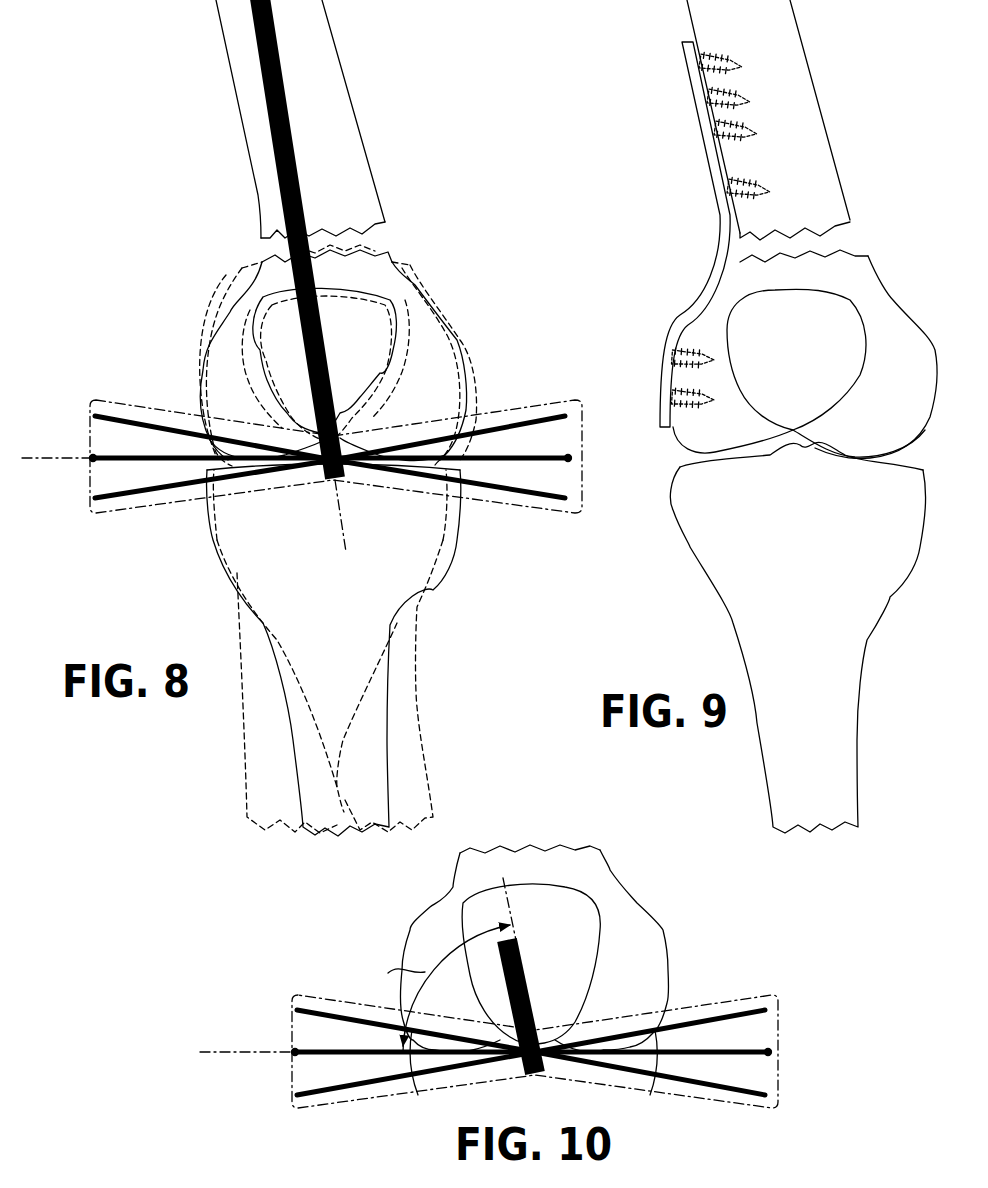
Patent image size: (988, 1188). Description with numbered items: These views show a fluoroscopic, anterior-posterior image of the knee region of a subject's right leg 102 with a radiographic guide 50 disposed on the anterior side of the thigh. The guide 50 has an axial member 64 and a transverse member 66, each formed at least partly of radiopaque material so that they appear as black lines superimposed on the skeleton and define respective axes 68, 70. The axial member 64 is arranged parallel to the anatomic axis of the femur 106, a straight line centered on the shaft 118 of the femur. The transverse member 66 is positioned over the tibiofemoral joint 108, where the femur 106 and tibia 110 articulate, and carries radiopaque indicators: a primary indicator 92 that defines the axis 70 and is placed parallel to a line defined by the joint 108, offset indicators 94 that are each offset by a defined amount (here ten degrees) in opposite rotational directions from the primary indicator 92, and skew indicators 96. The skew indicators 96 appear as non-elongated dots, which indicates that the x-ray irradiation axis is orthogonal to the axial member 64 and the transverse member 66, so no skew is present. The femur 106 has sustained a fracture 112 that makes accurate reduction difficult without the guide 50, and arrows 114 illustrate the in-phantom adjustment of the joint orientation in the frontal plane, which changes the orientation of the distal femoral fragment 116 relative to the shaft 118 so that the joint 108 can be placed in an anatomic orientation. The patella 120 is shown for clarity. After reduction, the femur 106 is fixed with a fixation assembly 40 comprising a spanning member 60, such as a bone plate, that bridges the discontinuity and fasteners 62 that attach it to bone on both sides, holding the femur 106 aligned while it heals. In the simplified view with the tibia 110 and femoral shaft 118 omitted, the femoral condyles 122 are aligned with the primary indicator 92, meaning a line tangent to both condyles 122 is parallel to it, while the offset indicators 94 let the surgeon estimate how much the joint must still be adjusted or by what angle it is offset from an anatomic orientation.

In FIG. 8, the right leg 102 is at (168, 134).
In FIG. 9, the right leg 102 is at (635, 133).
In FIG. 8, the guide 50 is at (252, 102).
In FIG. 10, the guide 50 is at (383, 944).
In FIG. 8, the axial member 64 is at (293, 145).
In FIG. 10, the axial member 64 is at (535, 990).
In FIG. 8, the shaft 118 is at (343, 70).
In FIG. 9, the shaft 118 is at (810, 70).
In FIG. 8, the right femur 106 is at (372, 161).
In FIG. 9, the right femur 106 is at (845, 162).
In FIG. 10, the right femur 106 is at (626, 892).
In FIG. 8, the fracture 112 is at (393, 233).
In FIG. 9, the fracture 112 is at (863, 233).
In FIG. 8, the patella 120 is at (258, 318).
In FIG. 9, the patella 120 is at (845, 400).
In FIG. 10, the patella 120 is at (578, 1000).
In FIG. 8, the distal femoral fragment 116 is at (420, 288).
In FIG. 9, the distal femoral fragment 116 is at (893, 312).
In FIG. 10, the distal femoral fragment 116 is at (642, 908).
In FIG. 8, the transverse member 66 is at (131, 404).
In FIG. 10, the transverse member 66 is at (738, 1000).
In FIG. 8, the axis 70 is at (58, 455).
In FIG. 10, the axis 70 is at (215, 1052).
In FIG. 8, the skew indicators 96 is at (92, 462).
In FIG. 8, the offset indicators 94 is at (537, 417).
In FIG. 8, the primary indicator 92 is at (545, 462).
In FIG. 10, the primary indicator 92 is at (316, 1056).
In FIG. 8, the axis 68 is at (347, 522).
In FIG. 10, the axis 68 is at (520, 915).
In FIG. 8, the tibiofemoral joint 108 is at (245, 517).
In FIG. 8, the tibia 110 is at (397, 647).
In FIG. 9, the tibia 110 is at (865, 647).
In FIG. 8, the arrows 114 is at (232, 757).
In FIG. 9, the fixation assembly 40 is at (696, 249).
In FIG. 9, the spanning member 60 is at (702, 296).
In FIG. 9, the fasteners 62 is at (745, 130).
In FIG. 10, the femoral condyles 122 is at (418, 1097).